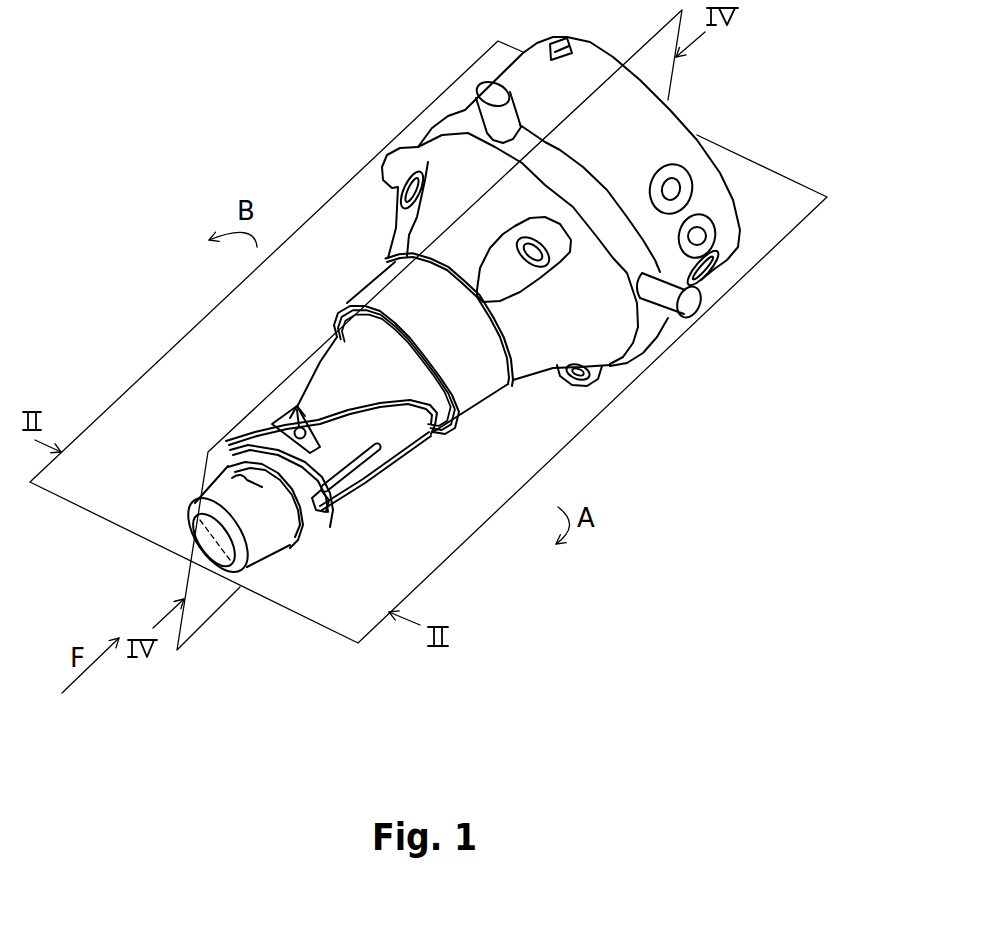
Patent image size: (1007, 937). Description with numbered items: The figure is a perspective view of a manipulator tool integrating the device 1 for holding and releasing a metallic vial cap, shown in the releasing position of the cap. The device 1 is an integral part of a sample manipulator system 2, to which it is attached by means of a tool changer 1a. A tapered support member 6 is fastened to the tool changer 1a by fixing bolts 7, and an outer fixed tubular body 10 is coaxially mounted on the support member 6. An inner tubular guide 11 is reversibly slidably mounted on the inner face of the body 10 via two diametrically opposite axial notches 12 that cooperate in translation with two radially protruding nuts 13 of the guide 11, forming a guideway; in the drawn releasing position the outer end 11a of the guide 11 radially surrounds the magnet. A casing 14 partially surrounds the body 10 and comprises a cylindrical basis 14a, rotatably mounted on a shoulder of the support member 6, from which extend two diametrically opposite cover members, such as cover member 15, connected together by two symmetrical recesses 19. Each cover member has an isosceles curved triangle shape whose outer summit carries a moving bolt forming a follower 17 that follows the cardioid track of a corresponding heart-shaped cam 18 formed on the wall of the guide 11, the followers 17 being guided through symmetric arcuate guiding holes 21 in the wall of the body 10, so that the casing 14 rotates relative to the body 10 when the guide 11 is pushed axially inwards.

The device 1 is at (411, 508).
The tool changer 1a is at (686, 116).
The sample manipulator system 2 is at (704, 415).
The tapered support member 6 is at (547, 382).
The fixing bolts 7 is at (393, 193).
The outer fixed tubular body 10 is at (379, 477).
The inner tubular guide 11 is at (275, 549).
The outer end of the guide 11a is at (233, 574).
The axial notches 12 is at (341, 487).
The radially protruding nuts 13 is at (318, 513).
The casing 14 is at (479, 424).
The cylindrical basis 14a is at (363, 290).
The cover member 15 is at (361, 403).
The follower 17 is at (297, 408).
The cam 18 is at (251, 498).
The recesses 19 is at (436, 433).
The arcuate guiding holes 21 is at (293, 431).